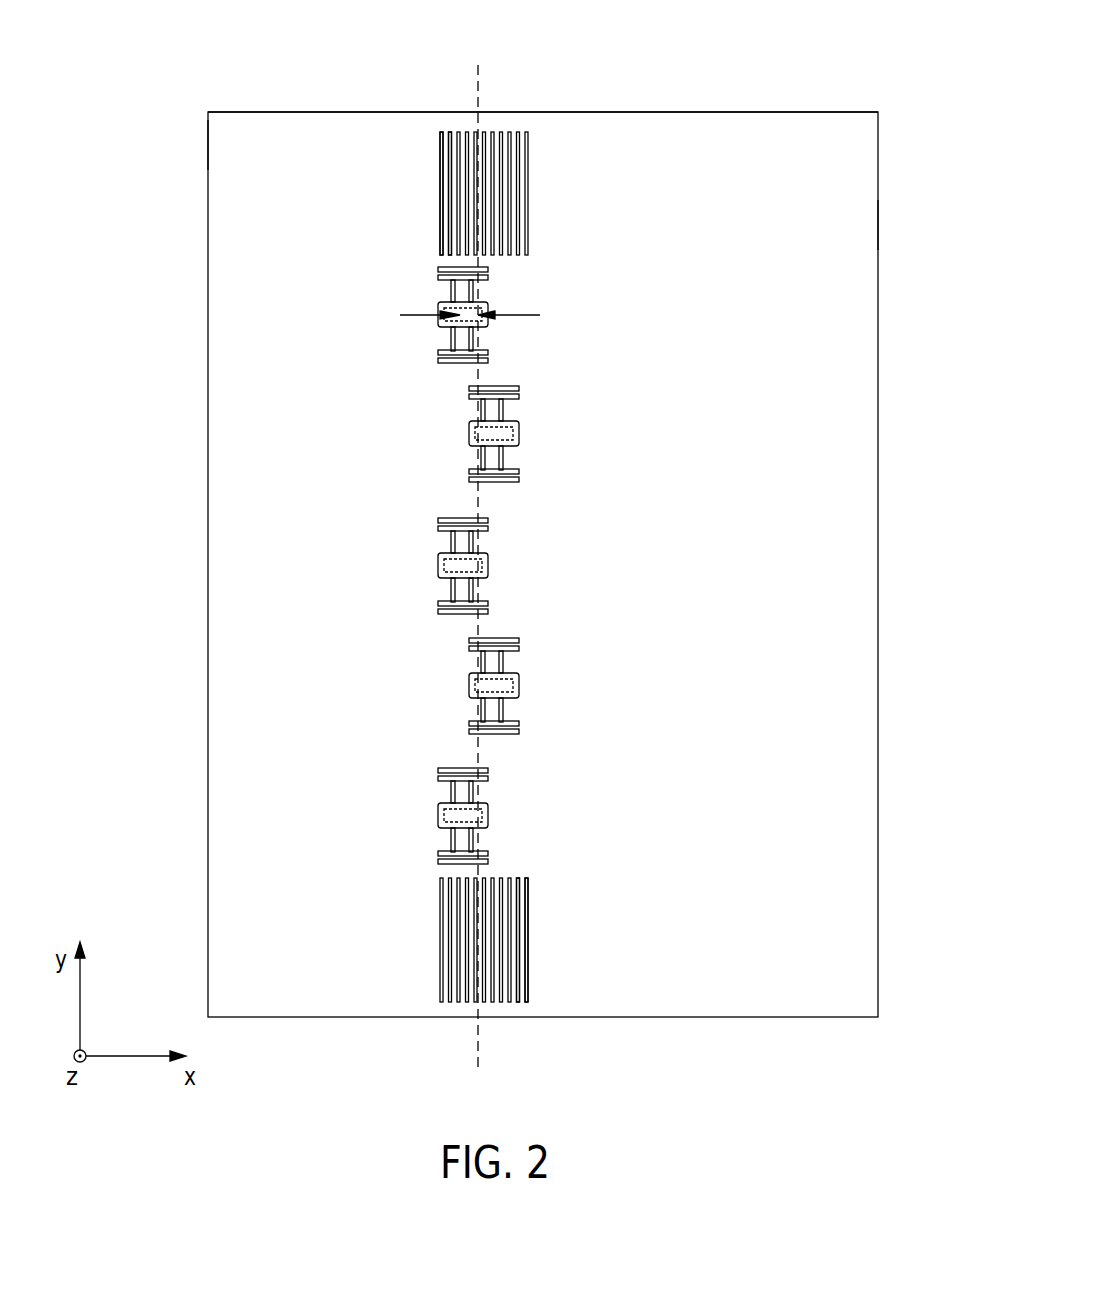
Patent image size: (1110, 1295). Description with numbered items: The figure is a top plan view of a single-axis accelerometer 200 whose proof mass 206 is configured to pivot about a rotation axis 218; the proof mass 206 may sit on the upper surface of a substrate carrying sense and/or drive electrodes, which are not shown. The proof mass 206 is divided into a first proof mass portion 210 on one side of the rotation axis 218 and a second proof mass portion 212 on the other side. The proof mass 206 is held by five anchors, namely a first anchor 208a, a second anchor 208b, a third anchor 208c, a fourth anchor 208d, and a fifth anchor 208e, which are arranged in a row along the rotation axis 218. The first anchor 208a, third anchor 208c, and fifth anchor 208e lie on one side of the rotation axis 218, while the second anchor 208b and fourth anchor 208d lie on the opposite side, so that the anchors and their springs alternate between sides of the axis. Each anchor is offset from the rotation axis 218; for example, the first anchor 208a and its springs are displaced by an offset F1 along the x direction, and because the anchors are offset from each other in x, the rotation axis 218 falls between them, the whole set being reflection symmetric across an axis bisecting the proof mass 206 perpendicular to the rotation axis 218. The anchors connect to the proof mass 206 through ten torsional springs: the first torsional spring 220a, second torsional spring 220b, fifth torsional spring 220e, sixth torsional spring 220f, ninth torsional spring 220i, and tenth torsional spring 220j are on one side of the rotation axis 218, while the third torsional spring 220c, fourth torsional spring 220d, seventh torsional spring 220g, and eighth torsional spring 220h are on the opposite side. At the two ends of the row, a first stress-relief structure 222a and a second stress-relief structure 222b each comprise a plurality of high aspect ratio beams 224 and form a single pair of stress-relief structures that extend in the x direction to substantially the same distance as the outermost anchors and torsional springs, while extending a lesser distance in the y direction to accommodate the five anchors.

The single-axis accelerometer 200 is at (922, 76).
The proof mass 206 is at (728, 115).
The first proof mass portion 210 is at (219, 132).
The second proof mass portion 212 is at (855, 231).
The rotation axis 218 is at (478, 96).
The first stress-relief structure 222a is at (525, 133).
The second stress-relief structure 222b is at (440, 1001).
The high aspect ratio beams 224 is at (440, 158).
The first anchor 208a is at (440, 320).
The second anchor 208b is at (519, 432).
The third anchor 208c is at (440, 570).
The fourth anchor 208d is at (519, 685).
The fifth anchor 208e is at (440, 820).
The first torsional spring 220a is at (455, 290).
The second torsional spring 220b is at (455, 342).
The third torsional spring 220c is at (501, 405).
The fourth torsional spring 220d is at (501, 465).
The fifth torsional spring 220e is at (455, 540).
The sixth torsional spring 220f is at (455, 595).
The seventh torsional spring 220g is at (501, 657).
The eighth torsional spring 220h is at (501, 717).
The ninth torsional spring 220i is at (455, 790).
The tenth torsional spring 220j is at (455, 845).
The offset F1 is at (482, 316).